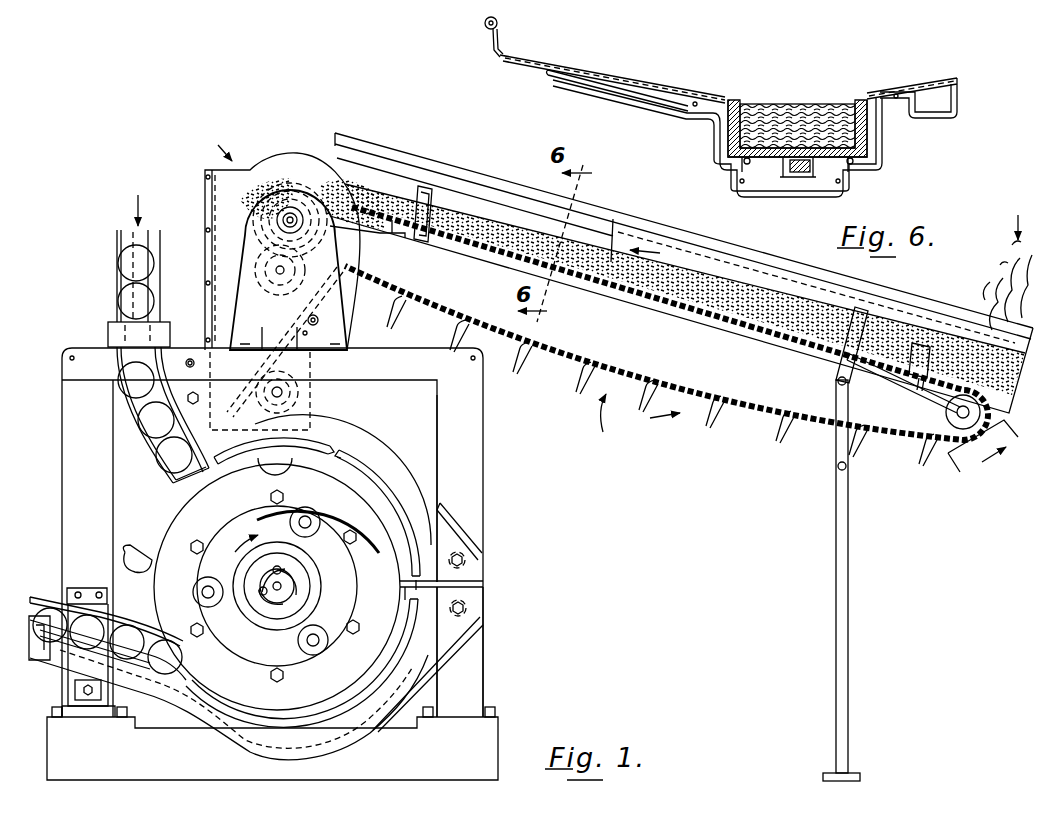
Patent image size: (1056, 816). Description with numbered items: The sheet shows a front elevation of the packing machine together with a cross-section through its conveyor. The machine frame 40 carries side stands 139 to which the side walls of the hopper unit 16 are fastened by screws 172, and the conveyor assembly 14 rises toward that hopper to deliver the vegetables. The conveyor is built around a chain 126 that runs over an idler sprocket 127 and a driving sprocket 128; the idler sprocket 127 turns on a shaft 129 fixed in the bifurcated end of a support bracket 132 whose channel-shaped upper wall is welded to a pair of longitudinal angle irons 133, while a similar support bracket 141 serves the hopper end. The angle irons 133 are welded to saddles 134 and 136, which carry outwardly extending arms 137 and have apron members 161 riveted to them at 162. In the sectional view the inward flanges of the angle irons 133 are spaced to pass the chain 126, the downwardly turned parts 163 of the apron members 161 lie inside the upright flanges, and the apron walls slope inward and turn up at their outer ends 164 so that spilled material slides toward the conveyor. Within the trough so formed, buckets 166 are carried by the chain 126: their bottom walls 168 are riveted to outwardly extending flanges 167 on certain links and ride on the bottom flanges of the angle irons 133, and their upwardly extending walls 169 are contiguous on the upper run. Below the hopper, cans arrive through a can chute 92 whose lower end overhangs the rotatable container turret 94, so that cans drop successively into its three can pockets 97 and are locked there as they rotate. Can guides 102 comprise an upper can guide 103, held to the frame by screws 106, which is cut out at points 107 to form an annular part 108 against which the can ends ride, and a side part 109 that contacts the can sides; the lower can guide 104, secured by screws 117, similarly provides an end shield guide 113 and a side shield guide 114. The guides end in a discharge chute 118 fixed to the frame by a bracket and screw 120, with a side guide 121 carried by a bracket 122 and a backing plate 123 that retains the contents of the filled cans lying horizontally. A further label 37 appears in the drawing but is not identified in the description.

In FIG. 1, the conveyor assembly 14 is at (681, 291).
In FIG. 1, the hopper unit 16 is at (292, 275).
In FIG. 1, the machine frame 40 is at (62, 402).
In FIG. 1, the can chute 92 is at (116, 292).
In FIG. 1, the container turret 94 is at (163, 503).
In FIG. 1, the can pockets 97 is at (262, 470).
In FIG. 1, the can guides 102 is at (452, 499).
In FIG. 1, the upper can guide 103 is at (388, 466).
In FIG. 1, the lower can guide 104 is at (440, 643).
In FIG. 1, the screws 106 is at (197, 347).
In FIG. 1, the bending points 107 is at (333, 442).
In FIG. 1, the annular part 108 is at (317, 470).
In FIG. 1, the side guide part 109 is at (437, 470).
In FIG. 1, the end shield guide 113 is at (383, 660).
In FIG. 1, the side shield guide 114 is at (427, 663).
In FIG. 1, the screws 117 is at (470, 607).
In FIG. 1, the discharge chute 118 is at (185, 715).
In FIG. 1, the bracket and screw 120 is at (92, 702).
In FIG. 1, the guide 121 is at (47, 590).
In FIG. 1, the bracket 122 is at (67, 575).
In FIG. 1, the backing plate 123 is at (46, 648).
In FIG. 1, the chain 126 is at (688, 386).
In FIG. 1, the idler sprocket 127 is at (988, 414).
In FIG. 1, the driving sprocket 128 is at (294, 216).
In FIG. 1, the shaft 129 is at (962, 414).
In FIG. 1, the support bracket 132 is at (902, 380).
In FIG. 1, the angle irons 133 is at (920, 350).
In FIG. 6, the angle irons 133 is at (740, 170).
In FIG. 1, the saddle 134 is at (423, 242).
In FIG. 1, the saddle 136 is at (836, 372).
In FIG. 6, the outwardly extending arms 137 is at (930, 108).
In FIG. 1, the side stands 139 is at (332, 318).
In FIG. 1, the support bracket 141 is at (390, 243).
In FIG. 6, the apron members 161 is at (648, 75).
In FIG. 6, the riveting 162 is at (575, 83).
In FIG. 6, the downwardly turned parts 163 is at (742, 100).
In FIG. 6, the upturned outer ends 164 is at (491, 58).
In FIG. 6, the buckets 166 is at (800, 108).
In FIG. 6, the outwardly extending flanges 167 is at (816, 172).
In FIG. 6, the bottom walls 168 is at (782, 165).
In FIG. 1, the upwardly extending walls 169 is at (652, 282).
In FIG. 1, the screws 172 is at (262, 238).
In FIG. 6, the frame 37 is at (636, 103).